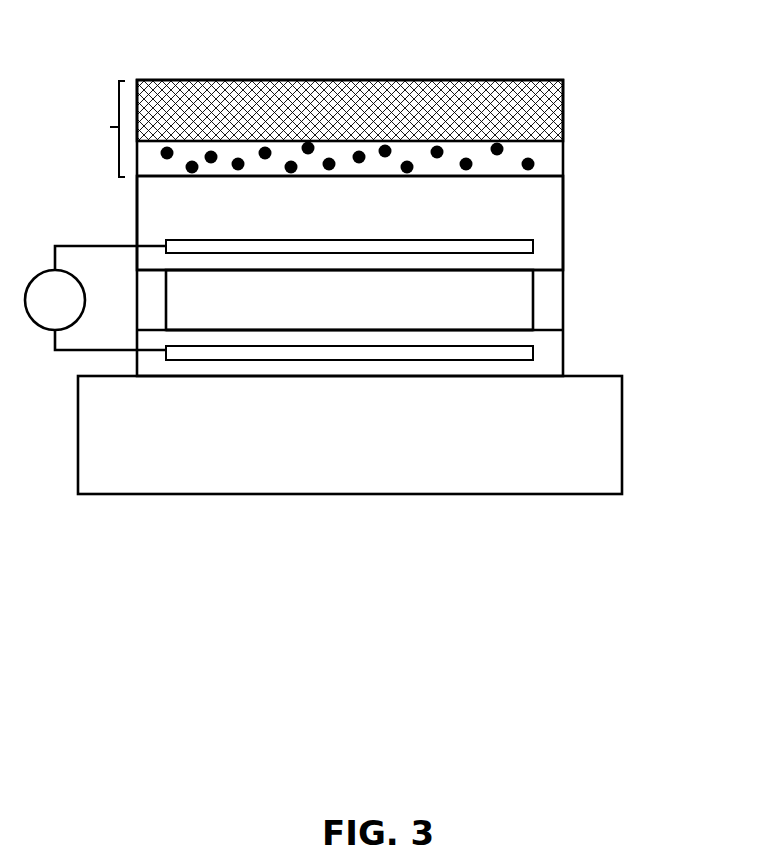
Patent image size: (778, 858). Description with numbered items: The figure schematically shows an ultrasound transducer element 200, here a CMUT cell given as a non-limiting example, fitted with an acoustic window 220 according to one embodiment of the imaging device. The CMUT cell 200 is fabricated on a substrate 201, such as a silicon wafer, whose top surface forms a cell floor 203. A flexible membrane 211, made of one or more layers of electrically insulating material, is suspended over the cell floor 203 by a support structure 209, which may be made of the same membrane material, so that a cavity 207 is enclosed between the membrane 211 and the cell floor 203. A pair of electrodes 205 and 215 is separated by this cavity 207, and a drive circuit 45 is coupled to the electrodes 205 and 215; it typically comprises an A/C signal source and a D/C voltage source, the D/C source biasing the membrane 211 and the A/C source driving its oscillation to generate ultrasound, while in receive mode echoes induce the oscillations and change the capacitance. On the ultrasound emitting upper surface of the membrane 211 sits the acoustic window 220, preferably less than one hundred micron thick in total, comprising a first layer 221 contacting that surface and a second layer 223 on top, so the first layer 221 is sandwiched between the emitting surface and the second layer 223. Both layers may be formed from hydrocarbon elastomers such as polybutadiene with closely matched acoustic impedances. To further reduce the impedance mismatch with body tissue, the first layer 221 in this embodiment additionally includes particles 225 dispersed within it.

The ultrasound transducer element 200 is at (393, 701).
The substrate 201 is at (217, 478).
The cell floor 203 is at (360, 330).
The electrode 205 is at (445, 352).
The cavity 207 is at (300, 305).
The support structure 209 is at (552, 305).
The membrane 211 is at (550, 217).
The electrode 215 is at (392, 247).
The acoustic window 220 is at (90, 129).
The first layer 221 is at (550, 160).
The second layer 223 is at (550, 112).
The particles 225 is at (288, 175).
The drive circuit 45 is at (45, 317).